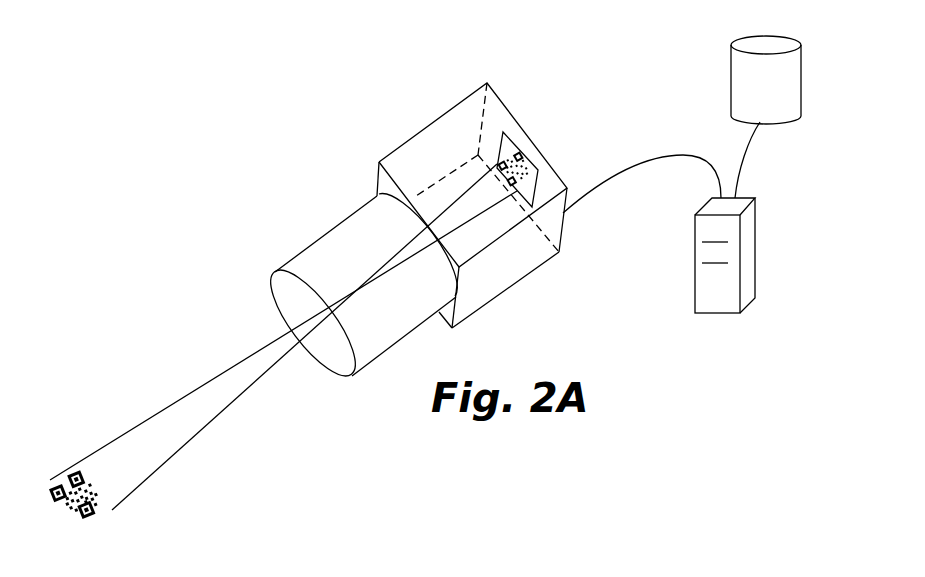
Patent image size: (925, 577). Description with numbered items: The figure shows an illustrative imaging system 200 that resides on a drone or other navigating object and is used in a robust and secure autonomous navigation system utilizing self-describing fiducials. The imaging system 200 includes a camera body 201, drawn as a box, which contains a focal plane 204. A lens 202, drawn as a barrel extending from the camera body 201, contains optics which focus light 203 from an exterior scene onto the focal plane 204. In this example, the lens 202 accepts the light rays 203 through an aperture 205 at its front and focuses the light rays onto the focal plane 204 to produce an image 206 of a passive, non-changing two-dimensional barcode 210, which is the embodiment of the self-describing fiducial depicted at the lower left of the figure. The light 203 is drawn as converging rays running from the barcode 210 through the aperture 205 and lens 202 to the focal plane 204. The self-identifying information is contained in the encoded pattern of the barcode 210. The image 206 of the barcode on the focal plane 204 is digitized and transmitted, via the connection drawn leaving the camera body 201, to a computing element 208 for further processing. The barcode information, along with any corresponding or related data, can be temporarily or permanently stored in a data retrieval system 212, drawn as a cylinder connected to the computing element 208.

The imaging system 200 is at (260, 73).
The camera body 201 is at (422, 158).
The lens 202 is at (313, 253).
The light 203 is at (197, 388).
The focal plane 204 is at (530, 157).
The aperture 205 is at (288, 292).
The image 206 is at (508, 153).
The computing element 208 is at (725, 305).
The 2D barcode 210 is at (97, 515).
The data retrieval system 212 is at (783, 94).